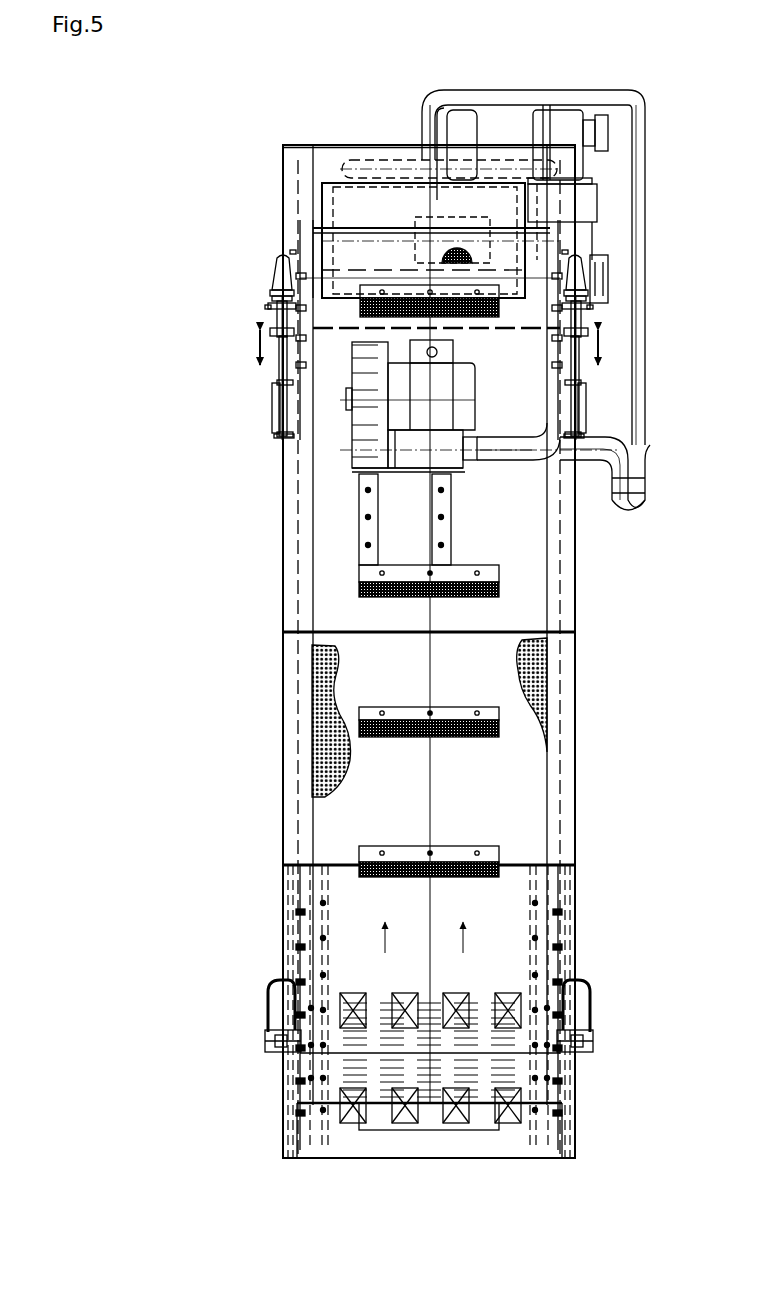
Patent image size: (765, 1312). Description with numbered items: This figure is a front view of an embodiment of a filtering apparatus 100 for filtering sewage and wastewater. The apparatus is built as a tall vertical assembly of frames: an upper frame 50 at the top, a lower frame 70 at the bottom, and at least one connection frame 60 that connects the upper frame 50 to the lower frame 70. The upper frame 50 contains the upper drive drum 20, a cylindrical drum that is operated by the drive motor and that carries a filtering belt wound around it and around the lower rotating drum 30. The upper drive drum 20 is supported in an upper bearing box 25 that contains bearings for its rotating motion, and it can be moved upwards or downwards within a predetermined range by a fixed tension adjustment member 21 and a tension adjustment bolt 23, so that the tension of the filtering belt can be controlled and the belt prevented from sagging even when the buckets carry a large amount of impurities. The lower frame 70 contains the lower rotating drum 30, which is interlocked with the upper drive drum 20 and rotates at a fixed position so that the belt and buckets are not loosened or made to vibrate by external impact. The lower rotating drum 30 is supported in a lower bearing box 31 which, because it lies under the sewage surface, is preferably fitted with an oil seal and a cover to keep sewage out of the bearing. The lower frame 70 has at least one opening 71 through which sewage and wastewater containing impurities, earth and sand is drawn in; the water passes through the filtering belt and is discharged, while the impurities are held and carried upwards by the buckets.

The filtering apparatus 100 is at (168, 125).
The upper frame 50 is at (290, 158).
The upper drive drum 20 is at (327, 255).
The upper bearing box 25 is at (275, 265).
The fixed tension adjustment member 21 is at (280, 325).
The tension adjustment bolt 23 is at (283, 405).
The connection frame 60 is at (292, 723).
The lower frame 70 is at (295, 980).
The lower rotating drum 30 is at (513, 1060).
The lower bearing box 31 is at (580, 1028).
The opening 71 is at (340, 1122).